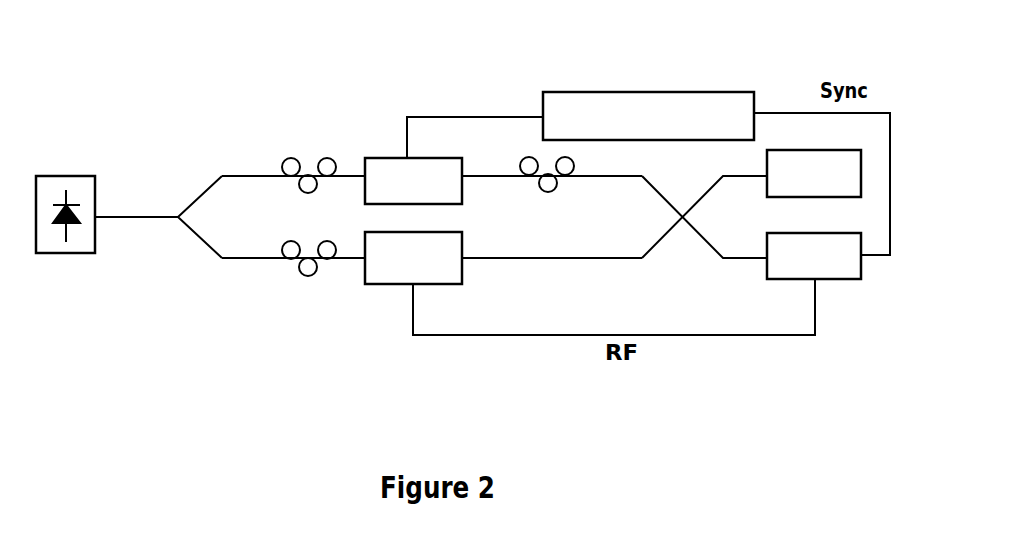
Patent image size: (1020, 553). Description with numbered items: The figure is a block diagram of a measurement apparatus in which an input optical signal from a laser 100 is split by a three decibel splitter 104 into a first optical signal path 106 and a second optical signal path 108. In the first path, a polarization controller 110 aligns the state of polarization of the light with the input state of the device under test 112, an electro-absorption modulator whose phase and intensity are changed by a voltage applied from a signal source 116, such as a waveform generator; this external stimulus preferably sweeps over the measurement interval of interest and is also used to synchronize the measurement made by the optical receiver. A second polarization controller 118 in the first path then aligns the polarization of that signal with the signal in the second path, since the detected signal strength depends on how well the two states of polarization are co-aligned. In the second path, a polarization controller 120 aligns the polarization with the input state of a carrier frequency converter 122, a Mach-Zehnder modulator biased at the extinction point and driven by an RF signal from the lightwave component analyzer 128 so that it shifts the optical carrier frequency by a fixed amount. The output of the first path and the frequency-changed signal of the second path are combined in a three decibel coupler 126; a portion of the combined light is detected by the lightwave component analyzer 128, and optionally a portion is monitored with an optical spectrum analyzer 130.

The laser 100 is at (68, 188).
The 3 dB splitter 104 is at (178, 213).
The first optical signal path 106 is at (237, 176).
The second optical signal path 108 is at (237, 258).
The polarization controller 110 is at (330, 160).
The device under test 112 is at (462, 158).
The signal source 116 is at (643, 92).
The second polarization controller 118 is at (547, 190).
The polarization controller 120 is at (308, 277).
The carrier frequency converter 122 is at (458, 248).
The 3 dB coupler 126 is at (682, 212).
The lightwave component analyzer 128 is at (835, 280).
The optical spectrum analyzer 130 is at (782, 150).